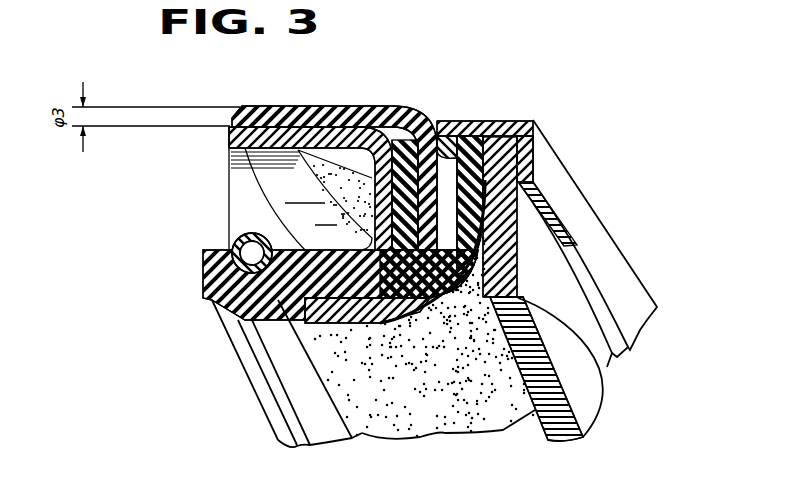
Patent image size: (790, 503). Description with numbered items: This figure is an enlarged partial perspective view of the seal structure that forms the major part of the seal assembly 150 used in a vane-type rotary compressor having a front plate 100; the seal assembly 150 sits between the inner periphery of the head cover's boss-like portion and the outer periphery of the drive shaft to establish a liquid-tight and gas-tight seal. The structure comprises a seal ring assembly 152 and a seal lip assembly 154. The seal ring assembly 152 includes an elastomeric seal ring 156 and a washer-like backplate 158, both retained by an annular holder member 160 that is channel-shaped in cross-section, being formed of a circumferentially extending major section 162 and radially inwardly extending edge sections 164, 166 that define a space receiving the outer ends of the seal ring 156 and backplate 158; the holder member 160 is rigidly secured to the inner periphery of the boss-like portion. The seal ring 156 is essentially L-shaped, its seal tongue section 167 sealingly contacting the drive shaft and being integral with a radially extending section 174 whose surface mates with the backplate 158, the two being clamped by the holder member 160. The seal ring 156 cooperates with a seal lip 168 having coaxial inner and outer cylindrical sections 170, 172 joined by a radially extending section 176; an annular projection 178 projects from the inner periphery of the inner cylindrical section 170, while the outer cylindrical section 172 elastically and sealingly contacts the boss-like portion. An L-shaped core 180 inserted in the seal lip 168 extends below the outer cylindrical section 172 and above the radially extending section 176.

The front plate 100 is at (372, 104).
The seal assembly 150 is at (522, 107).
The seal ring assembly 152 is at (450, 336).
The seal lip assembly 154 is at (255, 209).
The elastomeric seal ring 156 is at (612, 366).
The washer-like backplate 158 is at (503, 204).
The holder member 160 is at (458, 124).
The major section 162 is at (478, 123).
The edge section 164 is at (440, 130).
The edge section 166 is at (530, 154).
The seal tongue section 167 is at (318, 330).
The seal lip 168 is at (190, 298).
The inner cylindrical section 170 is at (212, 268).
The outer cylindrical section 172 is at (263, 118).
The radially extending section 174 is at (477, 217).
The radially extending section 176 is at (268, 173).
The annular projection 178 is at (232, 323).
The core 180 is at (294, 127).